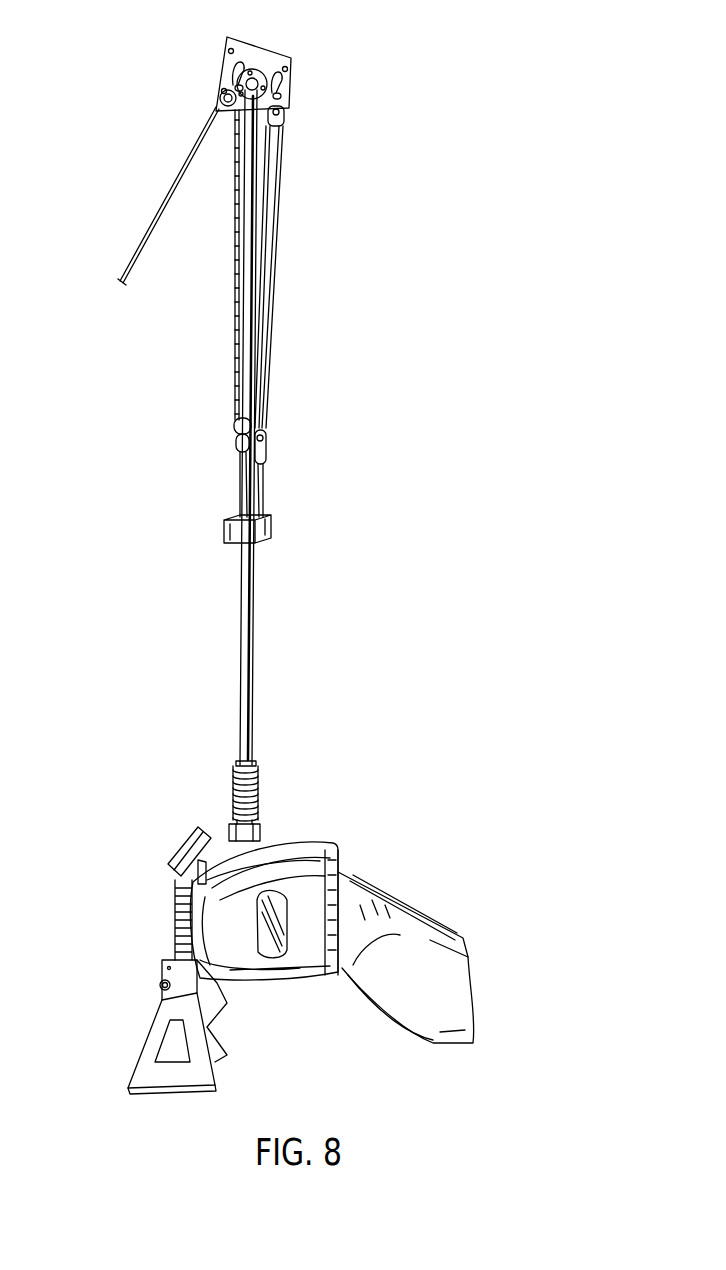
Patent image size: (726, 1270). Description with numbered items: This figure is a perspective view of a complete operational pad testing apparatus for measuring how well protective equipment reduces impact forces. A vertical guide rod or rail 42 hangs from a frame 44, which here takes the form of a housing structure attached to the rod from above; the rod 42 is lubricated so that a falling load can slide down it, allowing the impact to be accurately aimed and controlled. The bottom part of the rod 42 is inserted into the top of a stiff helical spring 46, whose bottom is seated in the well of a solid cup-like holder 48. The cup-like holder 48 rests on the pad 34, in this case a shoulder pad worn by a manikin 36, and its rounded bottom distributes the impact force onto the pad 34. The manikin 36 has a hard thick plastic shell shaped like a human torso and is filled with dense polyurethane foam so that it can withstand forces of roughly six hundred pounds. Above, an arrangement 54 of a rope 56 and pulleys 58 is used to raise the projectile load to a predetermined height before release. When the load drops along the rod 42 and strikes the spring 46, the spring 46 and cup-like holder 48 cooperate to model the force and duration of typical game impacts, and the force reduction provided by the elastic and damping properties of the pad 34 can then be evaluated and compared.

The pad 34 is at (172, 1012).
The manikin 36 is at (453, 999).
The rod or rail 42 is at (252, 183).
The frame 44 is at (277, 63).
The helical spring 46 is at (258, 772).
The cup-like holder 48 is at (260, 822).
The arrangement 54 is at (308, 385).
The rope 56 is at (273, 285).
The pulleys 58 is at (227, 83).